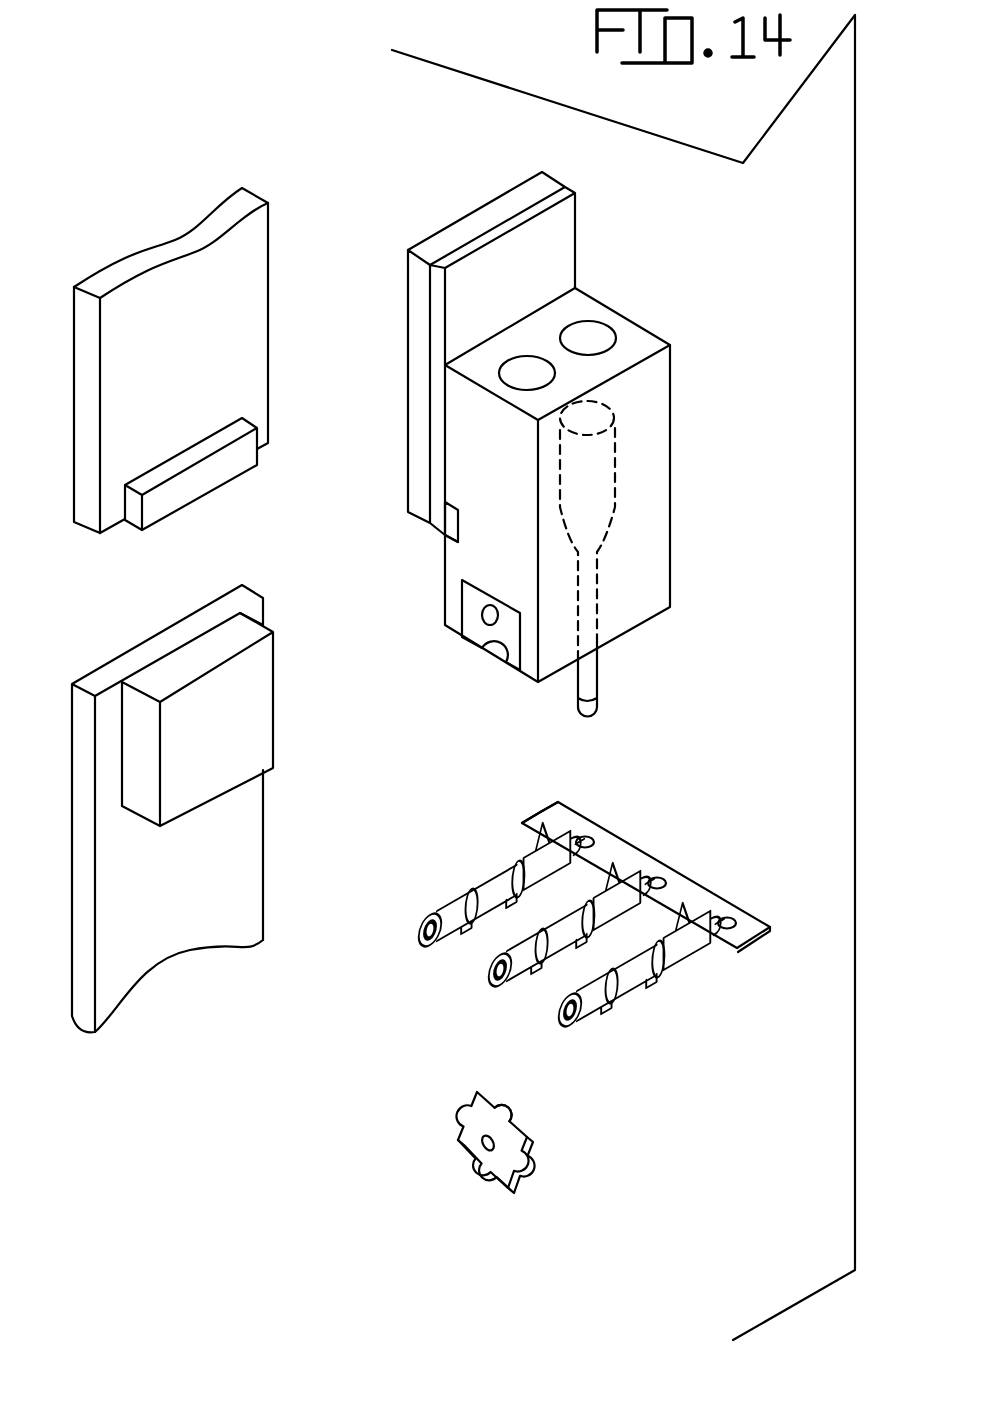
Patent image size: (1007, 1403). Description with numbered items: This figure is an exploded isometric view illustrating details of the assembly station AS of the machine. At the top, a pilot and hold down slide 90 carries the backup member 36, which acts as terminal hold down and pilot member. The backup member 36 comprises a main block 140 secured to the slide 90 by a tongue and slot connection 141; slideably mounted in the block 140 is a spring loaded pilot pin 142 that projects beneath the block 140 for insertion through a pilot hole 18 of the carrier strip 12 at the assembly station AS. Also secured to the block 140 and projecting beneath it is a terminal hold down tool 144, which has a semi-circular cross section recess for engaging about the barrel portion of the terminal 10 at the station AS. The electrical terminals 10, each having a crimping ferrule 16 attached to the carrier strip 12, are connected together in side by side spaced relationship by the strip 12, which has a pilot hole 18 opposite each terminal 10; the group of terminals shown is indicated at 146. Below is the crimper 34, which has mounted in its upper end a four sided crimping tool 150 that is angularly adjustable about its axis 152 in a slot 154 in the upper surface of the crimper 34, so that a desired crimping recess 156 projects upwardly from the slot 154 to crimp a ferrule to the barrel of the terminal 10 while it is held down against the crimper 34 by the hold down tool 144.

The pilot and hold down slide 90 is at (157, 361).
The backup member 36 is at (627, 502).
The main block 140 is at (672, 383).
The tongue and slot connection 141 is at (450, 507).
The terminal hold down tool 144 is at (477, 600).
The spring loaded pilot pin 142 is at (592, 675).
The crimper 34 is at (172, 810).
The slot 154 is at (200, 642).
The terminal strip assembly 146 is at (595, 897).
The assembly station AS is at (690, 815).
The carrier strip 12 is at (610, 858).
The pilot hole 18 is at (585, 833).
The crimping ferrule 16 is at (572, 833).
The electrical terminal 10 is at (465, 927).
The four sided crimping tool 150 is at (492, 1146).
The axis 152 is at (480, 1145).
The crimping recess 156 is at (493, 1112).